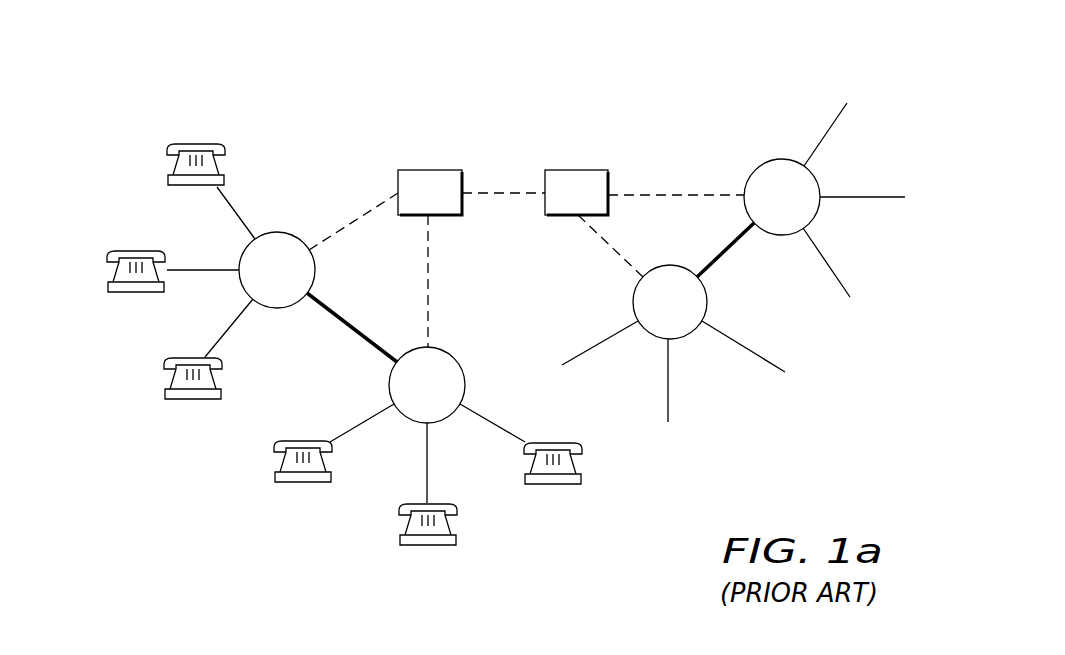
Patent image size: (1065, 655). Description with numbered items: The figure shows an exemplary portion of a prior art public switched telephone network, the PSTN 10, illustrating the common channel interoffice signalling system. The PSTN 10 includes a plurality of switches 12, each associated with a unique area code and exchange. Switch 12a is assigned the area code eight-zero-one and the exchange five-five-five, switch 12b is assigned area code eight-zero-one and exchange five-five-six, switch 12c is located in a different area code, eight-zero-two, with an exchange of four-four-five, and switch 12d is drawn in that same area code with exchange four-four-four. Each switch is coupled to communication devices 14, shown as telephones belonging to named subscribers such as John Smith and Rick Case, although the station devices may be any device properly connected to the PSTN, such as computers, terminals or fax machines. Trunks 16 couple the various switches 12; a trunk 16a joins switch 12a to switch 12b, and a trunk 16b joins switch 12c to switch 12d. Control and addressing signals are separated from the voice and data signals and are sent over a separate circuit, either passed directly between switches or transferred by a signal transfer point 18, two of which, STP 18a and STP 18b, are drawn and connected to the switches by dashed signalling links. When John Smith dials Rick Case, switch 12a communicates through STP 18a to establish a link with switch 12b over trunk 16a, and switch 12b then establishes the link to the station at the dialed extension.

The PSTN 10 is at (718, 56).
The switches 12 is at (571, 263).
The switch 12a is at (265, 234).
The switch 12b is at (470, 338).
The switch 12c is at (707, 304).
The switch 12d is at (782, 159).
The communication devices 14 is at (342, 347).
The trunks 16 is at (553, 300).
The trunk 16a is at (349, 330).
The trunk 16b is at (730, 250).
The signal transfer point (STP) 18 is at (526, 233).
The signal transfer point 18a is at (428, 170).
The signal transfer point 18b is at (590, 146).